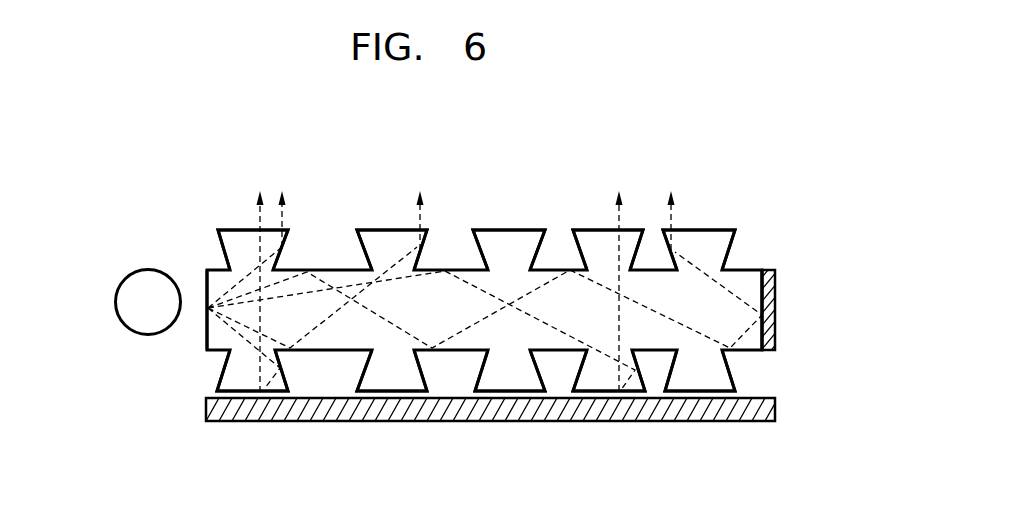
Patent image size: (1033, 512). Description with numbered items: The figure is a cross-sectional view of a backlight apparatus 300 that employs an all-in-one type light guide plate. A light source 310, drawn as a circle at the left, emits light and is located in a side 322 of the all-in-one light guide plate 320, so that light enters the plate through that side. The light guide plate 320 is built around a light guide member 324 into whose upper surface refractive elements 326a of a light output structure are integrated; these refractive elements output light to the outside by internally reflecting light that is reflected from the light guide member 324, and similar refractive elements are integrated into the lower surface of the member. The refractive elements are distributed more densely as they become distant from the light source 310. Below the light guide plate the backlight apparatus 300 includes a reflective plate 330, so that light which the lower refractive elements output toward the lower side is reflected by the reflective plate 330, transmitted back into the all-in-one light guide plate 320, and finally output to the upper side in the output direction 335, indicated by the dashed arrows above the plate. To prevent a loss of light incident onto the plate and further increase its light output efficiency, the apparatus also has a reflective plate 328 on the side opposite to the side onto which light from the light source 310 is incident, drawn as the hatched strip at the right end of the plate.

The backlight apparatus 300 is at (152, 421).
The light source 310 is at (148, 269).
The all-in-one light guide plate 320 is at (564, 195).
The side of the all-in-one light guide plate 322 is at (206, 283).
The light guide member 324 is at (757, 288).
The refractive elements 326a is at (720, 245).
The reflective plate 328 is at (774, 330).
The reflective plate 330 is at (777, 408).
The light output direction 335 is at (672, 218).